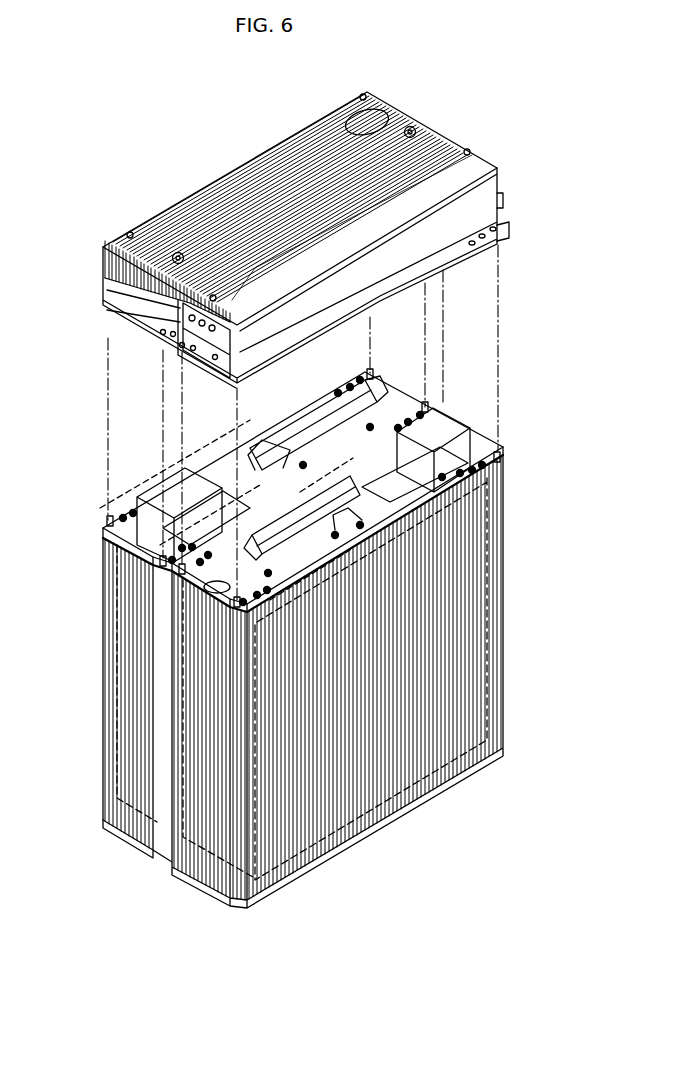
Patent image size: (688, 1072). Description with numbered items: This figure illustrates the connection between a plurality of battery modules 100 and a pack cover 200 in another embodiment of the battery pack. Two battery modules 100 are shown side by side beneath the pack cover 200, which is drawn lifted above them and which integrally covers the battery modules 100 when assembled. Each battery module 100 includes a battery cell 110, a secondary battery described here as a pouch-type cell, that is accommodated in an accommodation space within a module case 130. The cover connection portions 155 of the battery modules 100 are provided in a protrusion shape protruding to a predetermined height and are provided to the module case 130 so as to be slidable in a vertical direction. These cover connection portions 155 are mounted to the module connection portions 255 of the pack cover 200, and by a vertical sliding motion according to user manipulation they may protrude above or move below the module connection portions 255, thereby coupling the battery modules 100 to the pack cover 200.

The battery module 100 is at (118, 858).
The battery cell 110 is at (117, 690).
The module case 130 is at (103, 642).
The cover connection portion 155 is at (165, 566).
The pack cover 200 is at (273, 240).
The module connection portion 255 is at (175, 336).